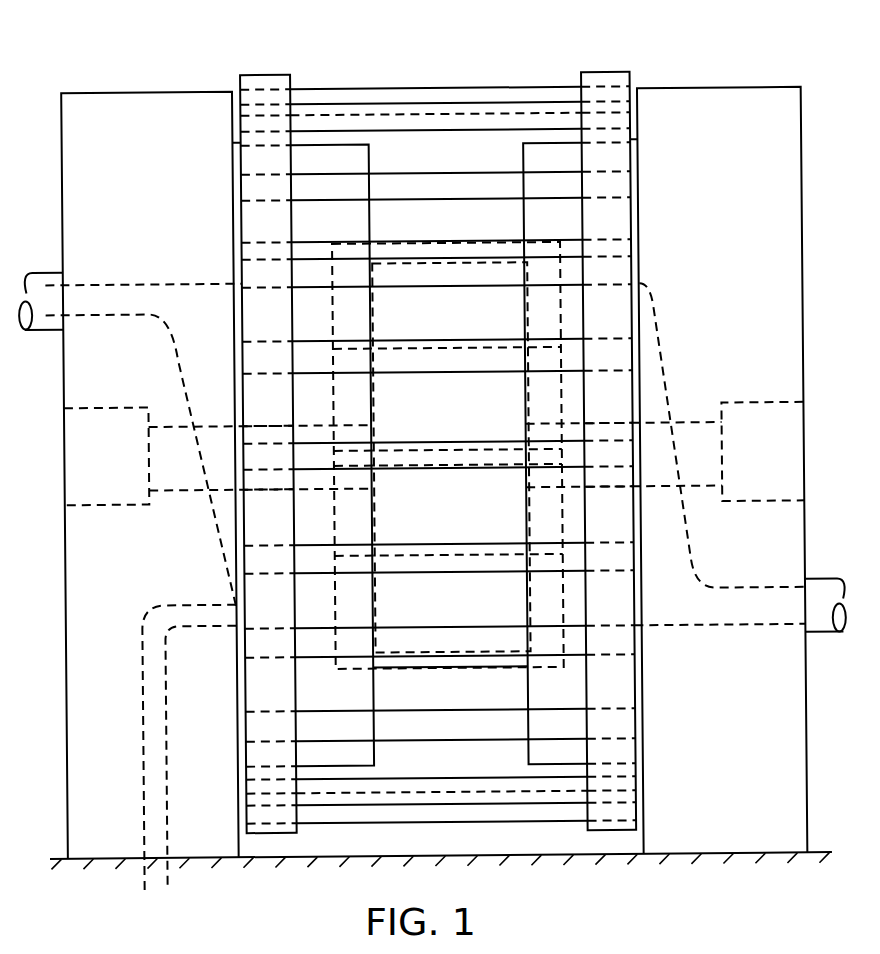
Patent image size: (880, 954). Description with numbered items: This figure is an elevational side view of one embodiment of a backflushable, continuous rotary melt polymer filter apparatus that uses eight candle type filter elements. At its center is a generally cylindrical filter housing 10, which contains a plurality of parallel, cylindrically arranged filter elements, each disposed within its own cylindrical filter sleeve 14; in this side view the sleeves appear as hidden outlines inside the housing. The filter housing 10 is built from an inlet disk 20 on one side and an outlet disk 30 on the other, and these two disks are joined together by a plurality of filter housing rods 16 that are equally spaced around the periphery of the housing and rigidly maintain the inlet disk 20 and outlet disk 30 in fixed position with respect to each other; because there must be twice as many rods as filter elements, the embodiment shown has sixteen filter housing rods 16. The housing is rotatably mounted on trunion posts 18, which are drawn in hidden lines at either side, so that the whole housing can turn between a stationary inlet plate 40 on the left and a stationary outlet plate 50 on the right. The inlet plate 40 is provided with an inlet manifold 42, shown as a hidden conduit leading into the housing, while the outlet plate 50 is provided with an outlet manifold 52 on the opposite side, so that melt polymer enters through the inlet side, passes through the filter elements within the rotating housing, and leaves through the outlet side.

The filter housing 10 is at (481, 49).
The filter sleeve 14 is at (441, 245).
The filter housing rods 16 is at (460, 122).
The trunion posts 18 is at (78, 442).
The inlet disk 20 is at (319, 156).
The outlet disk 30 is at (555, 156).
The stationary inlet plate 40 is at (143, 106).
The inlet manifold 42 is at (195, 358).
The stationary outlet plate 50 is at (712, 112).
The outlet manifold 52 is at (652, 397).